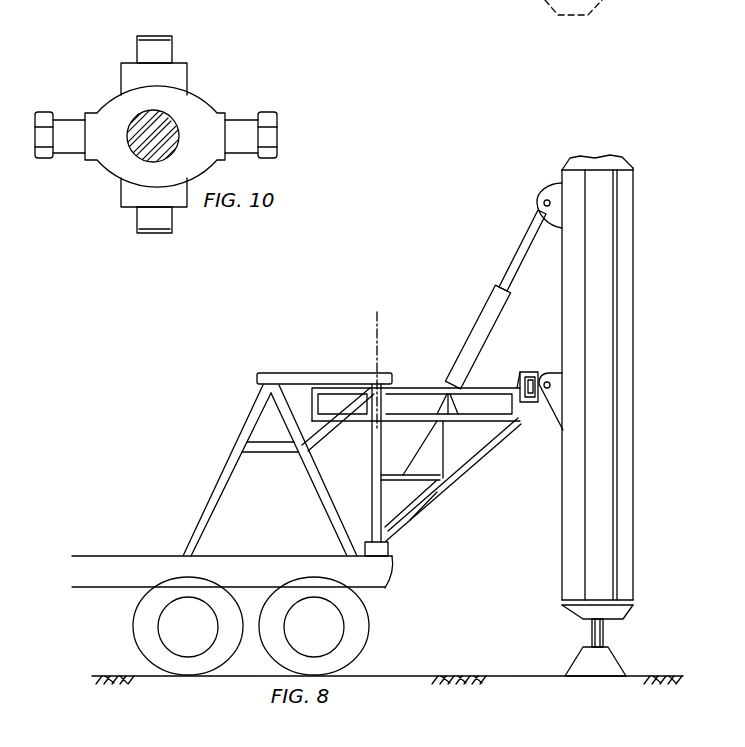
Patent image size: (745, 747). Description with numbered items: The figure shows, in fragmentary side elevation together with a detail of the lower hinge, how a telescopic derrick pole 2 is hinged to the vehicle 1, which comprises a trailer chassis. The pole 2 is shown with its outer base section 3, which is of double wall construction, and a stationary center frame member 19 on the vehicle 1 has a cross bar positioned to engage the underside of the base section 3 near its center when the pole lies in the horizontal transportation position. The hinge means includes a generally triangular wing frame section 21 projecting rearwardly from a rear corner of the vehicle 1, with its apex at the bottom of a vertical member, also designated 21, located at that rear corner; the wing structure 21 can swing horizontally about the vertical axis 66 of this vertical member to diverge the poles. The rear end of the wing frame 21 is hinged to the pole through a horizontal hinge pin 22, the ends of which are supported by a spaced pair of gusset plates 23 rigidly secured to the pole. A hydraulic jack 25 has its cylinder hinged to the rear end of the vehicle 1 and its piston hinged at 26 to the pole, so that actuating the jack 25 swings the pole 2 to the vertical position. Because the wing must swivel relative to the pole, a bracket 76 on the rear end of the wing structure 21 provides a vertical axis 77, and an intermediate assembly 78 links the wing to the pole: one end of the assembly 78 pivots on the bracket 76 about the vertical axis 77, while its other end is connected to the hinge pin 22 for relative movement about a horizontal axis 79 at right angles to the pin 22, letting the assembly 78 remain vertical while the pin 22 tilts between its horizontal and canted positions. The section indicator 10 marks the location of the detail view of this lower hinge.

In FIG. 8, the vehicle 1 is at (374, 575).
In FIG. 8, the pole 2 is at (648, 239).
In FIG. 8, the outer base section 3 is at (591, 308).
In FIG. 8, the section line for FIG. 10 is at (550, 348).
In FIG. 8, the center frame member 19 is at (258, 408).
In FIG. 8, the wing frame section 21 is at (371, 447).
In FIG. 10, the horizontal hinge pin 22 is at (238, 130).
In FIG. 8, the horizontal hinge pin 22 is at (551, 385).
In FIG. 8, the gusset plates 23 is at (556, 405).
In FIG. 8, the hydraulic jack 25 is at (482, 323).
In FIG. 8, the piston hinge 26 is at (553, 197).
In FIG. 8, the vertical axis 66 is at (376, 324).
In FIG. 8, the bracket 76 is at (520, 380).
In FIG. 10, the vertical axis 77 is at (163, 48).
In FIG. 8, the vertical axis 77 is at (510, 394).
In FIG. 10, the intermediate assembly 78 is at (182, 83).
In FIG. 8, the intermediate assembly 78 is at (538, 375).
In FIG. 10, the horizontal axis 79 is at (138, 141).